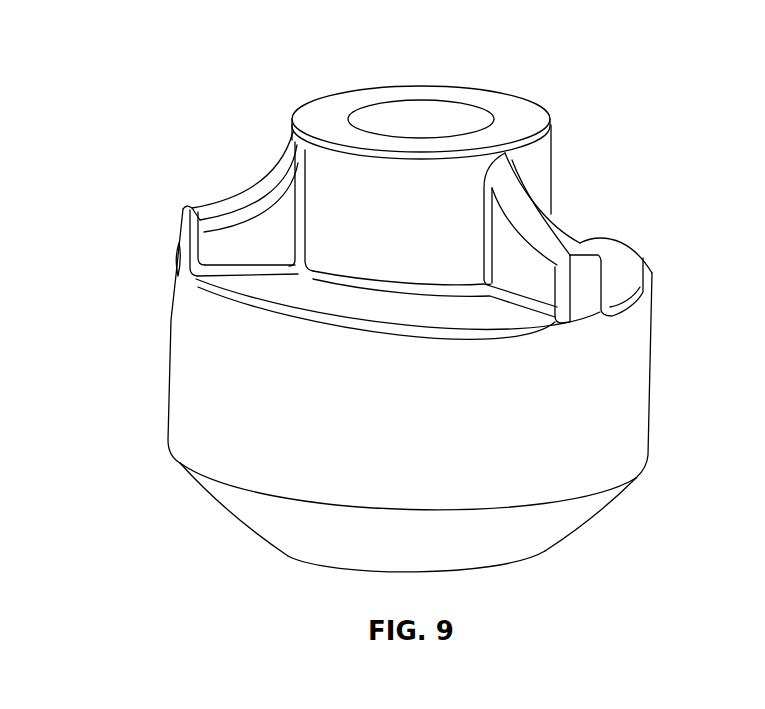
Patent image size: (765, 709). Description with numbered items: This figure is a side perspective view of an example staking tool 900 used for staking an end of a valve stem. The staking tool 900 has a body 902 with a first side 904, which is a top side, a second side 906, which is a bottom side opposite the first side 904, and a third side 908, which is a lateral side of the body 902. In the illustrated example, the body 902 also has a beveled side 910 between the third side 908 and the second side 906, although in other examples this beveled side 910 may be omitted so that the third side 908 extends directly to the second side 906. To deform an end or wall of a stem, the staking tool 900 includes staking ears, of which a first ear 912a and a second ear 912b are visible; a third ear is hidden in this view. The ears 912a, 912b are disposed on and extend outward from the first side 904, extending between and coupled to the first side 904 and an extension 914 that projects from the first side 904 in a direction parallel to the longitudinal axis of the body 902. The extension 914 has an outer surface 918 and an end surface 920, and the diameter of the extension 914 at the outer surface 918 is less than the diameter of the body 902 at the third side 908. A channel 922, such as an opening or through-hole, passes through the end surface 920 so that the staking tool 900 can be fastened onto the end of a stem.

The staking tool 900 is at (138, 58).
The body 902 is at (186, 367).
The first side 904 is at (242, 282).
The second side 906 is at (291, 556).
The third side 908 is at (420, 434).
The beveled side 910 is at (421, 551).
The first ear 912a is at (250, 187).
The second ear 912b is at (573, 241).
The extension 914 is at (530, 146).
The outer surface 918 is at (420, 228).
The end surface 920 is at (500, 108).
The channel 922 is at (386, 108).